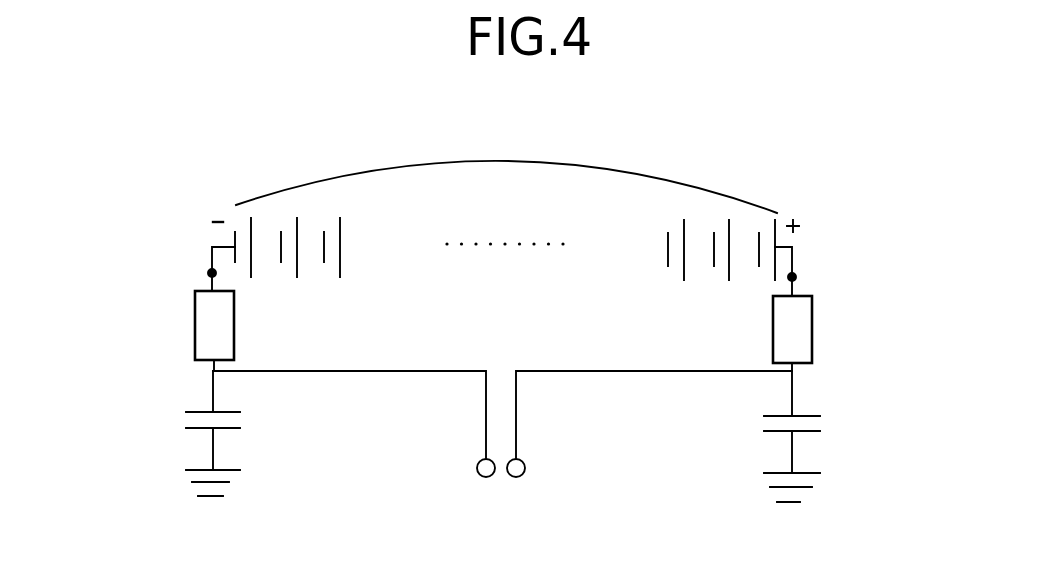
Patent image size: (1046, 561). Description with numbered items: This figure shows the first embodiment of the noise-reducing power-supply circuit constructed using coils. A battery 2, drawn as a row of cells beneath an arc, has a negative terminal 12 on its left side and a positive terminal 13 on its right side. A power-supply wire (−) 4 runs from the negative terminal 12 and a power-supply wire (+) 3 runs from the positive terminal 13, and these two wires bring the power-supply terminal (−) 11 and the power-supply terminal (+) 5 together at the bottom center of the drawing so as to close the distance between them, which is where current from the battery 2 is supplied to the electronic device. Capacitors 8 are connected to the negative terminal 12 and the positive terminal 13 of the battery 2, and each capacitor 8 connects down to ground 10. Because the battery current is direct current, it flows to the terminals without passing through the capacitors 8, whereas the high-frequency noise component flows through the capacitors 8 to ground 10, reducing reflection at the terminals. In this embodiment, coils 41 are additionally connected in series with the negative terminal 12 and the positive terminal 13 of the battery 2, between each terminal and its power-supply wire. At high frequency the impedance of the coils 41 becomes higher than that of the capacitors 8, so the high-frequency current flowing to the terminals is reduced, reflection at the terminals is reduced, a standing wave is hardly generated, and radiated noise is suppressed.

The battery 2 is at (690, 177).
The power-supply wire (+) 3 is at (622, 372).
The power-supply wire (−) 4 is at (421, 372).
The power-supply terminal (+) 5 is at (517, 478).
The capacitor 8 is at (186, 420).
The ground 10 is at (190, 471).
The power-supply terminal (−) 11 is at (485, 478).
The negative terminal 12 is at (208, 273).
The positive terminal 13 is at (796, 277).
The coil 41 is at (195, 327).